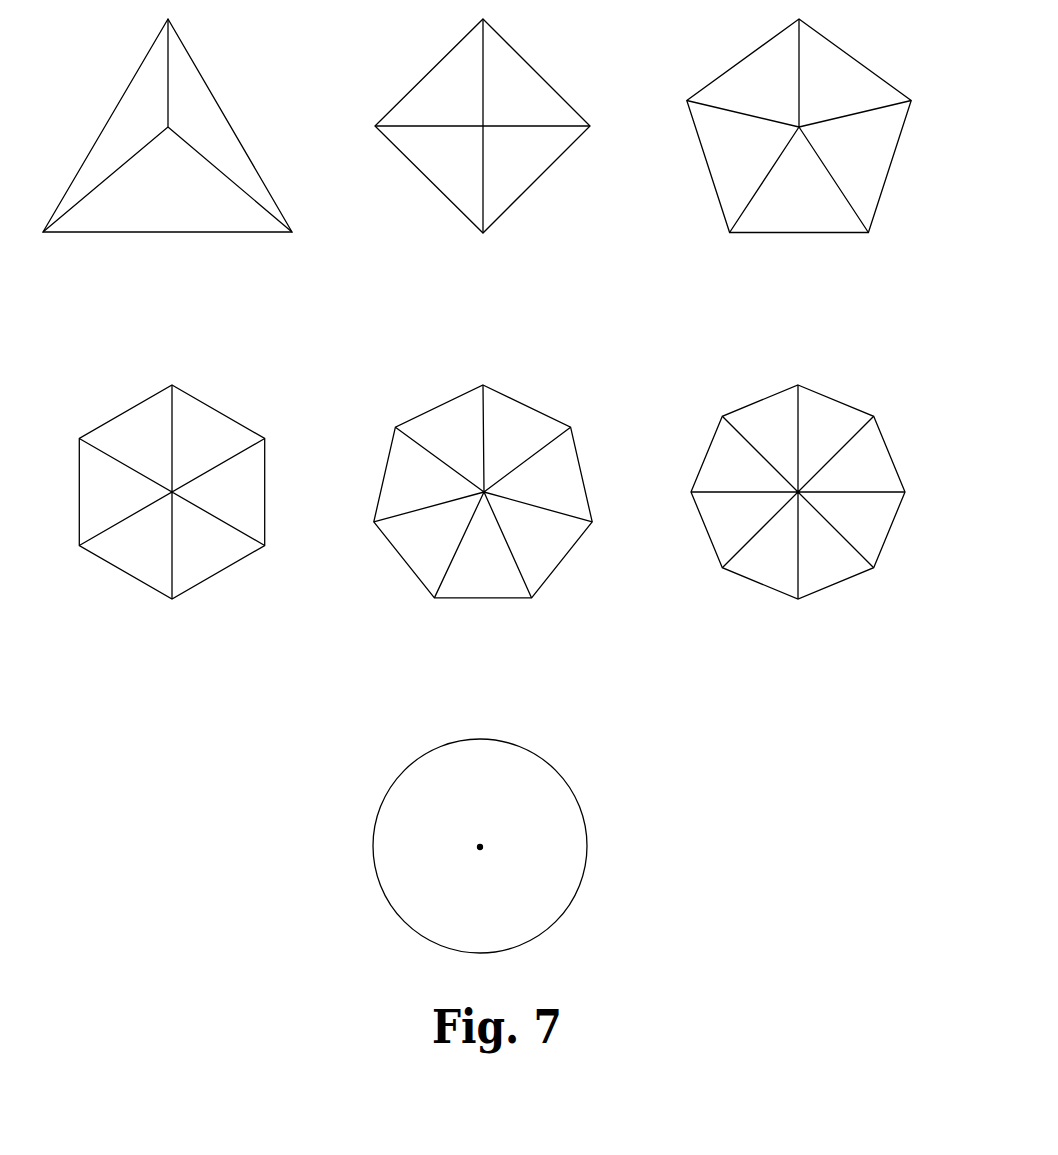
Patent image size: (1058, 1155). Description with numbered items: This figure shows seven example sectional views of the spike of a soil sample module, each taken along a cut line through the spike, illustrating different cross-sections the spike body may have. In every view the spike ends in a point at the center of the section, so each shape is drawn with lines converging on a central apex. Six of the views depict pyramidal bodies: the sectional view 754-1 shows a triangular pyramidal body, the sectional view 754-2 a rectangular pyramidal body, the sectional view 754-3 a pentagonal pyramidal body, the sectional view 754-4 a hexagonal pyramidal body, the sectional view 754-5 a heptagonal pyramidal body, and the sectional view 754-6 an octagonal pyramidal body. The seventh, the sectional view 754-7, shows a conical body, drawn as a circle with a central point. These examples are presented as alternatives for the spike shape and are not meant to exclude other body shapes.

The sectional view of triangular pyramidal spike body 754-1 is at (203, 82).
The sectional view of rectangular pyramidal spike body 754-2 is at (550, 78).
The sectional view of pentagonal pyramidal spike body 754-3 is at (852, 52).
The sectional view of hexagonal pyramidal spike body 754-4 is at (215, 578).
The sectional view of heptagonal pyramidal spike body 754-5 is at (550, 577).
The sectional view of octagonal pyramidal spike body 754-6 is at (847, 578).
The sectional view of conical spike body 754-7 is at (558, 920).